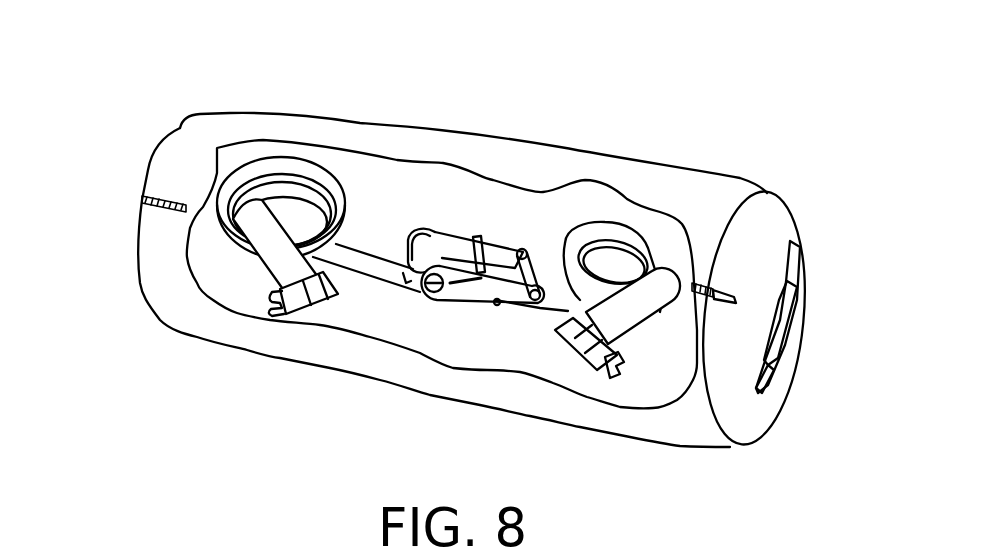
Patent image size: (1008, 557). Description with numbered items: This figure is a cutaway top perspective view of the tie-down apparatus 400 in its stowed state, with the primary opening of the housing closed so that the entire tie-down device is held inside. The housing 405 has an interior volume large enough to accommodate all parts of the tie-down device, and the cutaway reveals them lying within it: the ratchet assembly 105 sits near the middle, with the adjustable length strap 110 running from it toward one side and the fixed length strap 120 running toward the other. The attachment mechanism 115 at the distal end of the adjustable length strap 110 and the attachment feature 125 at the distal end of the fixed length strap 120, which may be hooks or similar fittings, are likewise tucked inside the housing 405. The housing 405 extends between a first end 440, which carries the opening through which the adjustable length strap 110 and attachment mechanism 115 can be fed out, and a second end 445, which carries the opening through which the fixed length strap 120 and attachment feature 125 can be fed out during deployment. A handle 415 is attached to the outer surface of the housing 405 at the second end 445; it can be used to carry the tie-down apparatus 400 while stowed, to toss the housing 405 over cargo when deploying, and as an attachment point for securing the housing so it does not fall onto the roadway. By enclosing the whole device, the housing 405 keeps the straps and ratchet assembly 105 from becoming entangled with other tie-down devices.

The ratchet assembly 105 is at (466, 316).
The adjustable length strap 110 is at (297, 163).
The attachment mechanism 115 is at (303, 302).
The fixed length strap 120 is at (605, 235).
The attachment feature 125 is at (583, 348).
The tie-down apparatus 400 is at (755, 50).
The housing 405 is at (666, 183).
The handle 415 is at (790, 287).
The first end 440 is at (132, 148).
The second end 445 is at (816, 366).